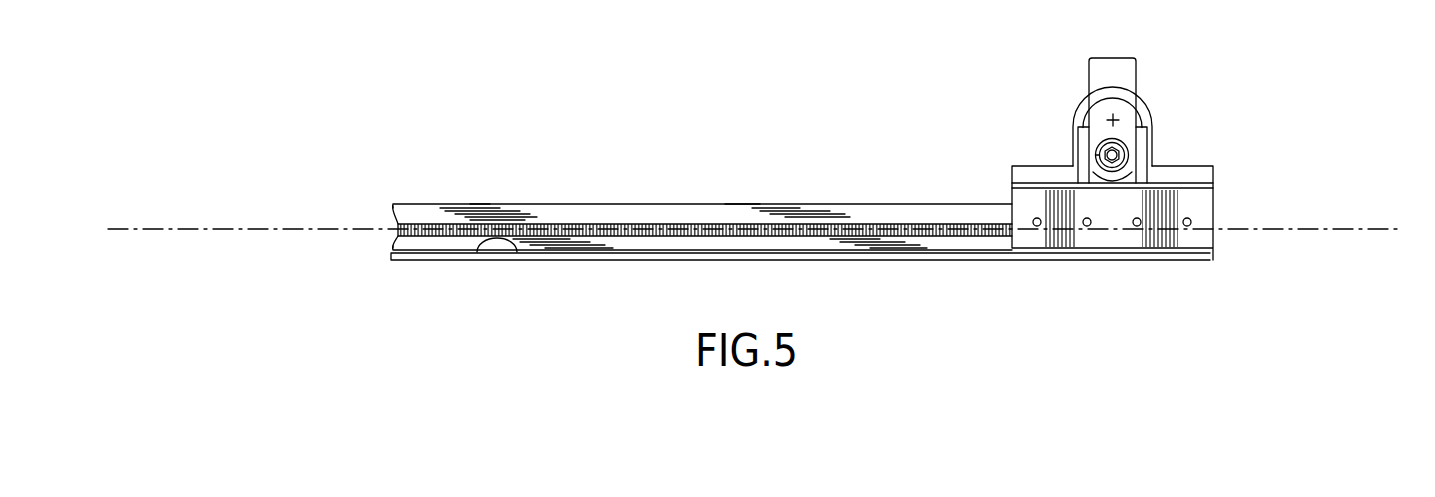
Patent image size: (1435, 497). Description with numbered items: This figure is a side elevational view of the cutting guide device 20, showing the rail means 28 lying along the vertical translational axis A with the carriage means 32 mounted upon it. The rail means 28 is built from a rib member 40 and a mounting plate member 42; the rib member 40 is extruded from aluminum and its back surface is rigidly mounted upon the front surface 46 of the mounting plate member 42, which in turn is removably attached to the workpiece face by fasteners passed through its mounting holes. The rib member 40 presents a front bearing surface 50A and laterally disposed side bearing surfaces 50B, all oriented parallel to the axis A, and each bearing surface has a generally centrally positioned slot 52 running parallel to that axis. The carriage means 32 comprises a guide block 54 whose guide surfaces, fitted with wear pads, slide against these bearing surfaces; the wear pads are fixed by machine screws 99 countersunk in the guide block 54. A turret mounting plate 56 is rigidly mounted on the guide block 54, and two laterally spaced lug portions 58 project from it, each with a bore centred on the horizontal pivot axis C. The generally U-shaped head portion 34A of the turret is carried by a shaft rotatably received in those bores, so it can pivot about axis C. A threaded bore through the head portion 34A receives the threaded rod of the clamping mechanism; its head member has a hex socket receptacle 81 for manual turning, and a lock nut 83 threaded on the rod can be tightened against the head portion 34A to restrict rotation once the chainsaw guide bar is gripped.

The cutting blade assembly 20 is at (731, 214).
The rail means 28 is at (728, 190).
The carriage means 32 is at (1171, 252).
The head portion 34A is at (1118, 77).
The rib member 40 is at (677, 190).
The mounting plate member 42 is at (424, 261).
The front surface 46 is at (497, 238).
The front bearing surface 50A is at (477, 190).
The side bearing surfaces 50B is at (405, 210).
The slot 52 is at (570, 216).
The guide block 54 is at (1213, 185).
The turret mounting plate 56 is at (1213, 170).
The lug portions 58 is at (1153, 108).
The hex socket receptacle 81 is at (1078, 152).
The lock nut 83 is at (1128, 153).
The machine screws 99 is at (1187, 226).
The vertical translational axis A is at (117, 229).
The horizontal pivot axis C is at (1098, 100).